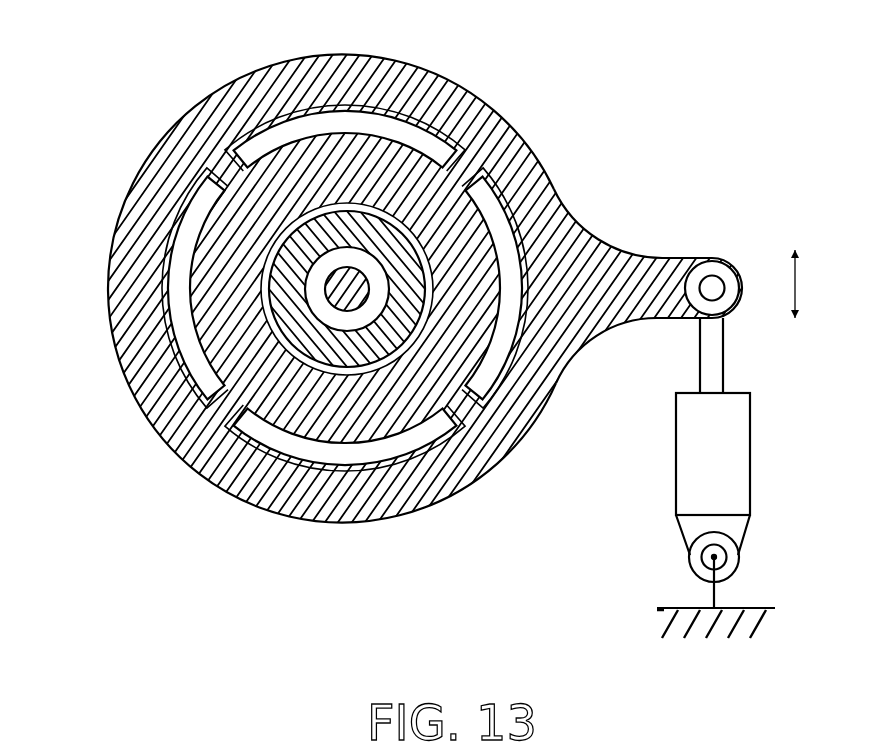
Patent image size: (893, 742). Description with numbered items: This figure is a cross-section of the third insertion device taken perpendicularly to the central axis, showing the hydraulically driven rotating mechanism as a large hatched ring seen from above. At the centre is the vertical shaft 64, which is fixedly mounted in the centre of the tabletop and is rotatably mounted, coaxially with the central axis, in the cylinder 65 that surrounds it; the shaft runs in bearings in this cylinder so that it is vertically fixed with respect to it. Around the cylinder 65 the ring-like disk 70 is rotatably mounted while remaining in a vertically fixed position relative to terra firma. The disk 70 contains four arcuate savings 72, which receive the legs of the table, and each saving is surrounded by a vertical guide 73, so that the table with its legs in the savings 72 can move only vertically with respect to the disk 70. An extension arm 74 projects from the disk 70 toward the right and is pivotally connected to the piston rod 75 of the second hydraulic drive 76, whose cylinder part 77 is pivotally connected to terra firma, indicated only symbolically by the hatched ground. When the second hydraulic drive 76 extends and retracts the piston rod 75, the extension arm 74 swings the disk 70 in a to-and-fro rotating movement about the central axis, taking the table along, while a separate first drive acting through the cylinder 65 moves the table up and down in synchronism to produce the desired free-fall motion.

The ring-like disk 70 is at (432, 92).
The savings 72 is at (502, 217).
The vertical guides 73 is at (481, 170).
The vertical shaft 64 is at (330, 287).
The cylinder 65 is at (293, 323).
The extension arm 74 is at (662, 258).
The piston rod 75 is at (700, 360).
The second hydraulic drive 76 is at (782, 430).
The cylinder part 77 is at (676, 462).